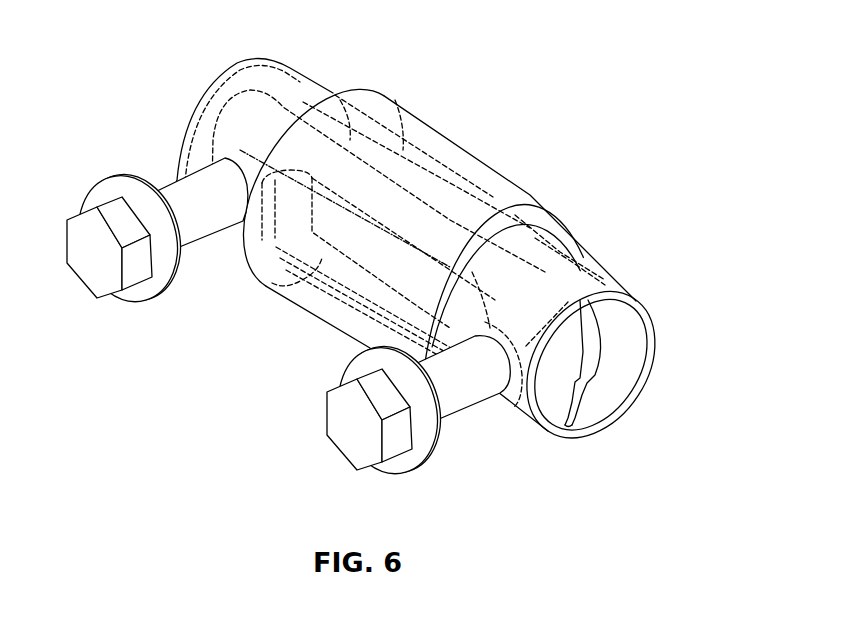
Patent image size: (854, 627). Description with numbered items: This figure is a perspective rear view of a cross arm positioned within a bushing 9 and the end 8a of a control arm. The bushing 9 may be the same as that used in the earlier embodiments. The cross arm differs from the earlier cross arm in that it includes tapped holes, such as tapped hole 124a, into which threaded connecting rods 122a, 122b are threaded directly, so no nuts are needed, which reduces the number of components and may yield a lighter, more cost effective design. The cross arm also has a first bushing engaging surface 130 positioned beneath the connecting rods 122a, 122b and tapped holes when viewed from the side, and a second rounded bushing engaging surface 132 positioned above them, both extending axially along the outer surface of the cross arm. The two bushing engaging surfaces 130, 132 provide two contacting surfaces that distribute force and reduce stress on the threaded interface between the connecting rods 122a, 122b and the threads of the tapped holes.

The bushing 9 is at (607, 277).
The end of control arm 8a is at (560, 223).
The second rounded bushing engaging surface 132 is at (536, 330).
The tapped hole 124a is at (603, 343).
The first bushing engaging surface 130 is at (565, 424).
The threaded connecting rod 122a is at (457, 400).
The threaded connecting rod 122b is at (197, 227).